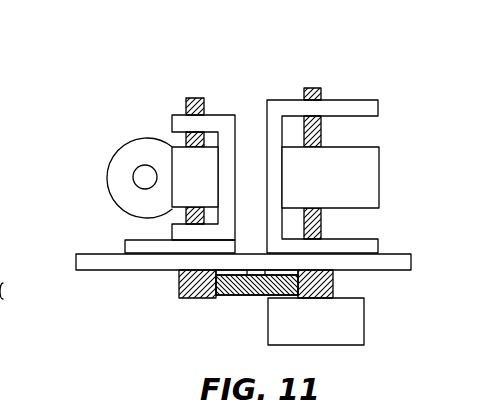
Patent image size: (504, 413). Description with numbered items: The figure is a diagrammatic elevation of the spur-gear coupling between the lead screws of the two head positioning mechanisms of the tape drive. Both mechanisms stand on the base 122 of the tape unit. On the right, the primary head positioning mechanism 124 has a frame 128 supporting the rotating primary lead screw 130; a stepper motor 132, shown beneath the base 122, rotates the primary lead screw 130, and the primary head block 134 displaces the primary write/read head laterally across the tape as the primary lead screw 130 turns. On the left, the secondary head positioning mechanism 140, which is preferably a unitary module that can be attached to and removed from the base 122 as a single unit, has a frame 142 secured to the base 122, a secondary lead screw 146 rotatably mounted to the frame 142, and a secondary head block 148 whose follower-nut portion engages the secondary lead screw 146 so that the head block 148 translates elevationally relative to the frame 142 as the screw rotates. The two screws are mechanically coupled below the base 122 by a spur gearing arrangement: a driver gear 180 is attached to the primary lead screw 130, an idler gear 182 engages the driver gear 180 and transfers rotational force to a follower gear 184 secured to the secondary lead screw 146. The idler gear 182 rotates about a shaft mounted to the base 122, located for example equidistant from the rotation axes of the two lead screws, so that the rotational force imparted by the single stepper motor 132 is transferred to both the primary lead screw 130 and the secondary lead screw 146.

The base 122 is at (100, 272).
The primary head positioning mechanism 124 is at (313, 82).
The frame 128 is at (274, 100).
The primary lead screw 130 is at (322, 133).
The stepper motor 132 is at (364, 330).
The primary head block 134 is at (379, 178).
The secondary head positioning mechanism 140 is at (90, 146).
The frame 142 is at (124, 245).
The secondary lead screw 146 is at (185, 97).
The secondary head block 148 is at (171, 145).
The driver gear 180 is at (334, 285).
The idler gear 182 is at (245, 297).
The follower gear 184 is at (190, 299).